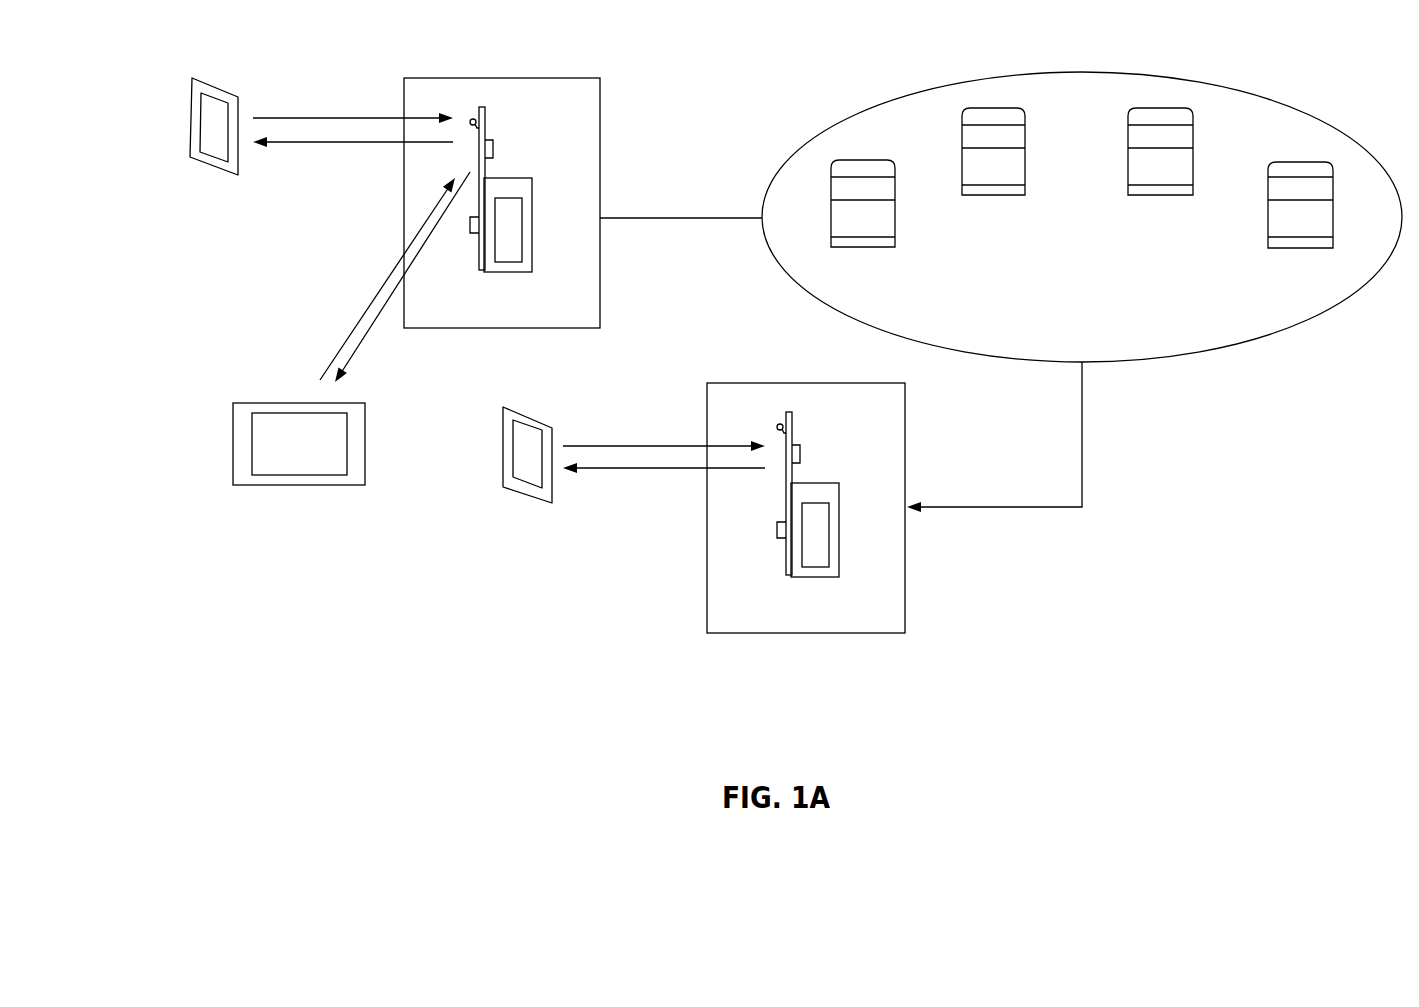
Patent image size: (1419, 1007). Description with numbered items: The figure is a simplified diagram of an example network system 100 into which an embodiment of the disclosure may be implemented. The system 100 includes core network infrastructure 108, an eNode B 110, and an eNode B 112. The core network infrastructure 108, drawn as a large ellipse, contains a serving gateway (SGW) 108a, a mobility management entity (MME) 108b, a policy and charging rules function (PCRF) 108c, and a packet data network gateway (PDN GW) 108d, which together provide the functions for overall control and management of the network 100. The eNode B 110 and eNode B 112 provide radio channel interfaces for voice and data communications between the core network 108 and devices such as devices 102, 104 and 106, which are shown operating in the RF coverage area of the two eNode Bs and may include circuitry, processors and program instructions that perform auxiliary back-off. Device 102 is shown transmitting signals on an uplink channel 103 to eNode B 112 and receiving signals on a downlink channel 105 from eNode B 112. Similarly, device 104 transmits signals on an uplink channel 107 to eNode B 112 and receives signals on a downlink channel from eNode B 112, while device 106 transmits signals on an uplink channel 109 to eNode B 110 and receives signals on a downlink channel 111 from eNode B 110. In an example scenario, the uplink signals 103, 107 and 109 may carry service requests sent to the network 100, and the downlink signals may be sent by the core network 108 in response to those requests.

The system 100 is at (783, 88).
The device 102 is at (190, 125).
The uplink channel 103 is at (310, 113).
The device 104 is at (233, 448).
The downlink channel 105 is at (345, 143).
The device 106 is at (525, 492).
The uplink channel 107 is at (342, 350).
The core network infrastructure 108 is at (1308, 113).
The serving gateway (SGW) 108a is at (895, 243).
The mobility management entity (MME) 108b is at (962, 160).
The policy and charging rules function (PCRF) 108c is at (1193, 160).
The packet data network gateway (PDN GW) 108d is at (1268, 243).
The uplink channel 109 is at (623, 443).
The eNode B 110 is at (840, 565).
The downlink channel 111 is at (660, 470).
The eNode B 112 is at (532, 263).